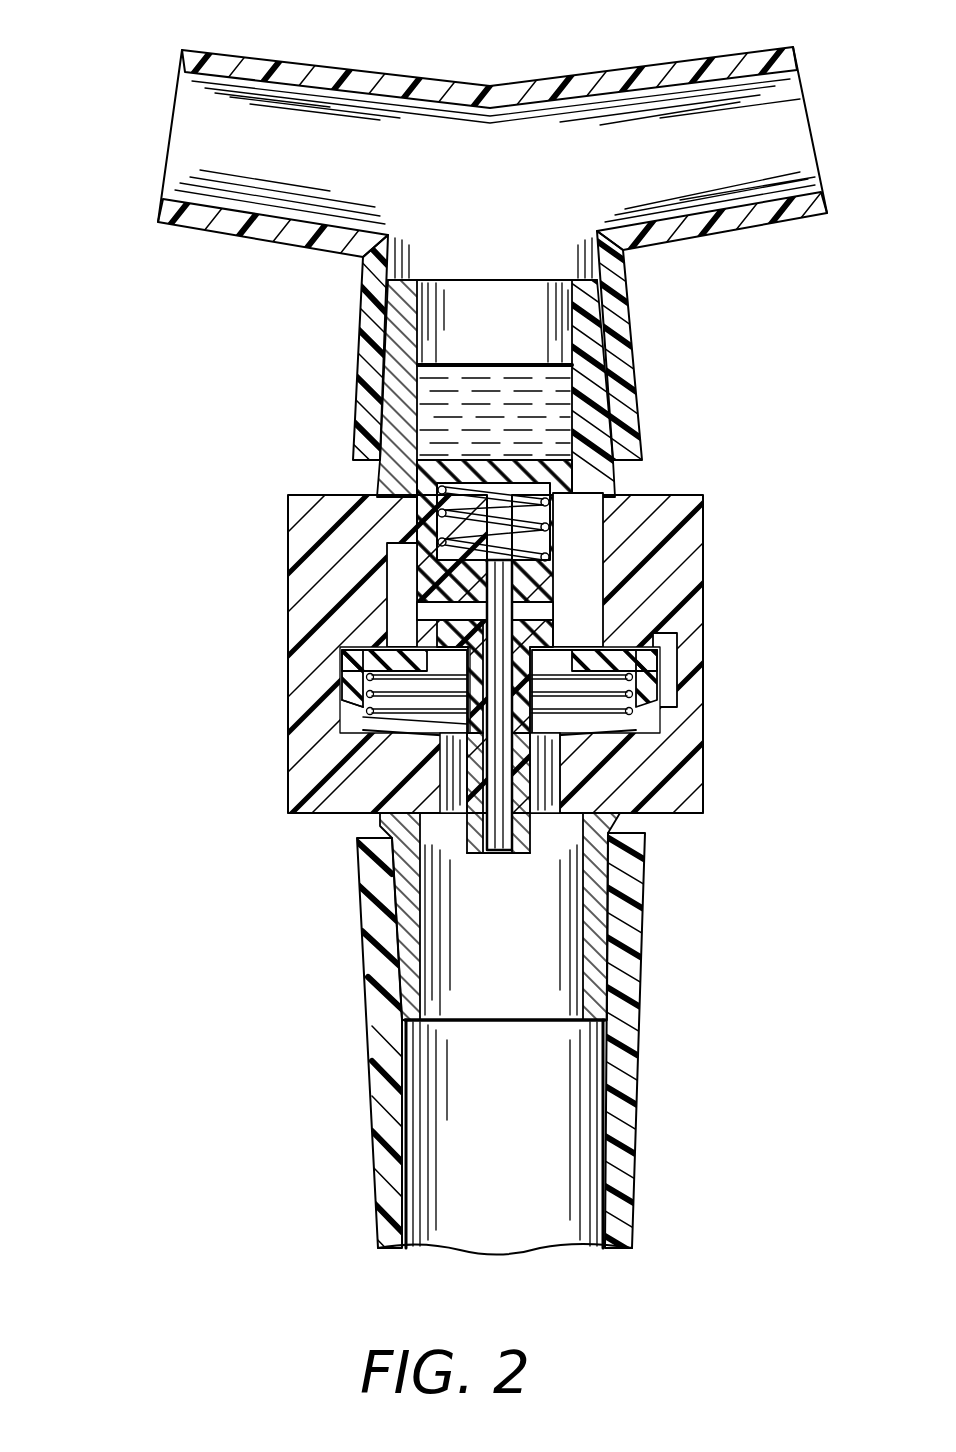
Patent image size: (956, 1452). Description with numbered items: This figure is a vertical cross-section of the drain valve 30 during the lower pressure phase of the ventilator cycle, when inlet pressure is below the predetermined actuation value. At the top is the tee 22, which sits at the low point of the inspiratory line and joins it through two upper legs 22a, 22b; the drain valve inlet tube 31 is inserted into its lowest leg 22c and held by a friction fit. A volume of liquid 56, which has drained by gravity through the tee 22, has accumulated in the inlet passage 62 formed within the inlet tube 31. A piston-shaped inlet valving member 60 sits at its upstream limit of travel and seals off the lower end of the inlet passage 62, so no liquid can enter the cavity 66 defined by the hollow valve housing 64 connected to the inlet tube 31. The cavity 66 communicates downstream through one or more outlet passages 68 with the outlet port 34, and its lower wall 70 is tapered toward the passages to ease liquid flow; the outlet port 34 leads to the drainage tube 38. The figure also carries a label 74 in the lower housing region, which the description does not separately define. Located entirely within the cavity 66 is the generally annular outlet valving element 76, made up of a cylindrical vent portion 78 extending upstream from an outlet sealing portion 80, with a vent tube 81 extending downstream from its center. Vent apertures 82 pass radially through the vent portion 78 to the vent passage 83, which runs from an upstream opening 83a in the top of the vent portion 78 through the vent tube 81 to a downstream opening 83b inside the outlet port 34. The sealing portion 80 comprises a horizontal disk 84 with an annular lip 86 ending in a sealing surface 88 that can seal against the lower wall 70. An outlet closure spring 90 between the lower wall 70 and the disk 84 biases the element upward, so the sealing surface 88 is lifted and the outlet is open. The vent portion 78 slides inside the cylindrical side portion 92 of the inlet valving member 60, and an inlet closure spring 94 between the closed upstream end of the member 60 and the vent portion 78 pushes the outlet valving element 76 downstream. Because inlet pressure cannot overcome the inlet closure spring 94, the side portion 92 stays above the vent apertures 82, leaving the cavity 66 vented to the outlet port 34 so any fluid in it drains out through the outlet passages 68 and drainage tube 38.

The tee 22 is at (562, 80).
The upper leg 22a is at (787, 47).
The upper leg 22b is at (238, 52).
The lowest leg 22c is at (633, 357).
The drain valve 30 is at (165, 425).
The drain valve inlet tube 31 is at (372, 368).
The outlet port 34 is at (403, 970).
The drainage tube 38 is at (378, 1148).
The volume of liquid 56 is at (493, 363).
The inlet valving member 60 is at (447, 460).
The inlet passage 62 is at (420, 317).
The valve housing 64 is at (400, 545).
The cavity 66 is at (620, 633).
The outlet passages 68 is at (442, 812).
The lower wall 70 is at (353, 722).
The bore 74 is at (503, 783).
The outlet valving element 76 is at (657, 640).
The vent portion 78 is at (440, 642).
The outlet sealing portion 80 is at (633, 672).
The vent tube 81 is at (497, 856).
The vent apertures 82 is at (433, 607).
The vent passage 83 is at (533, 775).
The upstream opening 83a is at (560, 492).
The downstream opening 83b is at (502, 831).
The disk 84 is at (355, 646).
The annular lip 86 is at (370, 680).
The sealing surface 88 is at (372, 712).
The outlet closure spring 90 is at (387, 713).
The cylindrical side portion 92 is at (413, 543).
The inlet closure spring 94 is at (505, 488).